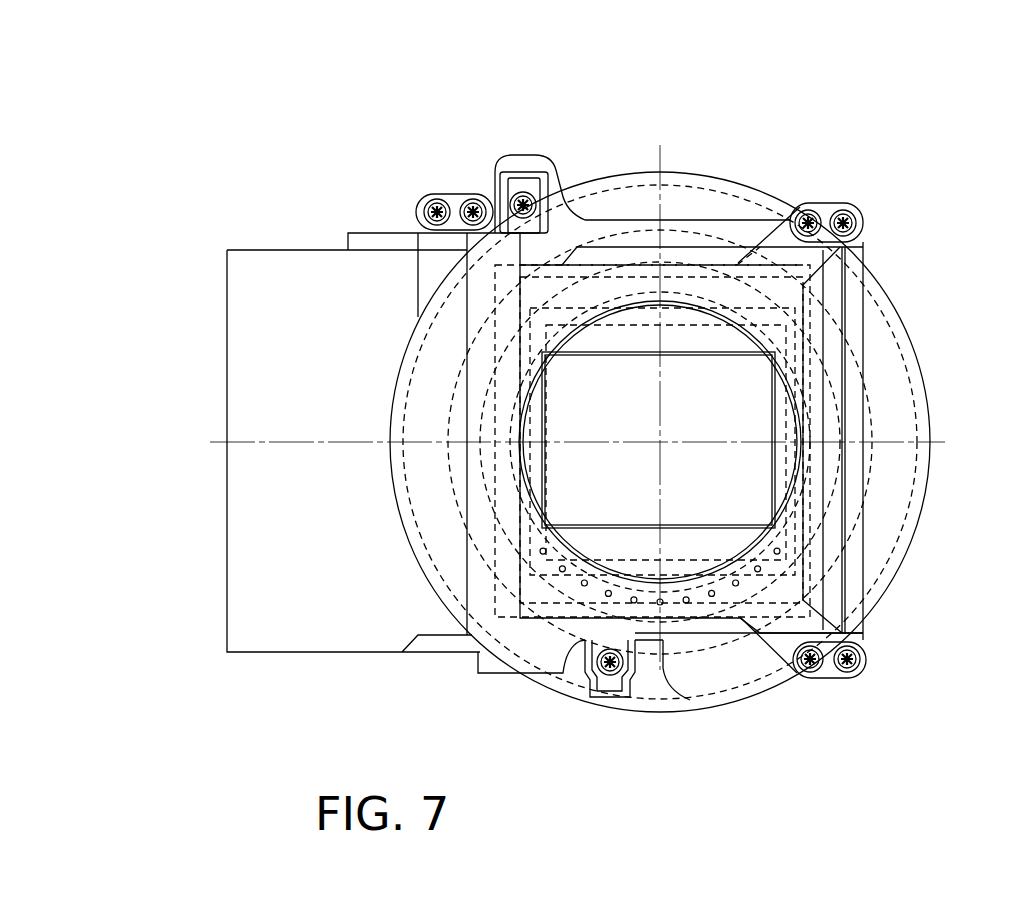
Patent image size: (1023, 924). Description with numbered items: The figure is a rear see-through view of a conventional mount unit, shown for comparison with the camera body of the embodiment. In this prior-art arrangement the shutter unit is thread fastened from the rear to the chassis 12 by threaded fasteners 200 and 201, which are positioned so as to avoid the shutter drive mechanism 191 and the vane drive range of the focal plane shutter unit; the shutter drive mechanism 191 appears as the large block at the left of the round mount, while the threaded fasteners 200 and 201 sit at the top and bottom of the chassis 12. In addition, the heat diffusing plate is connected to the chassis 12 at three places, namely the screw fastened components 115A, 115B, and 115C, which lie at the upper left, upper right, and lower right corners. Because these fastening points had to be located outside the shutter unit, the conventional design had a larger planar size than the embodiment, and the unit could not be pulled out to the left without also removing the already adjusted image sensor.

The chassis 12 is at (498, 185).
The shutter drive mechanism 191 is at (303, 312).
The threaded fastener 200 is at (527, 200).
The threaded fastener 201 is at (617, 668).
The screw fastened component 115A is at (858, 662).
The screw fastened component 115B is at (818, 227).
The screw fastened component 115C is at (455, 205).